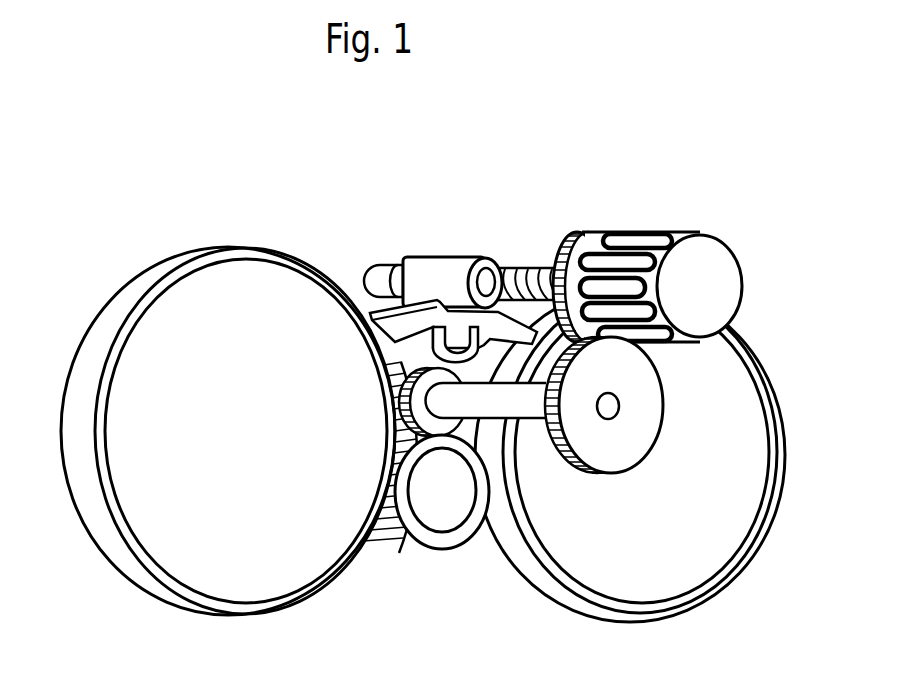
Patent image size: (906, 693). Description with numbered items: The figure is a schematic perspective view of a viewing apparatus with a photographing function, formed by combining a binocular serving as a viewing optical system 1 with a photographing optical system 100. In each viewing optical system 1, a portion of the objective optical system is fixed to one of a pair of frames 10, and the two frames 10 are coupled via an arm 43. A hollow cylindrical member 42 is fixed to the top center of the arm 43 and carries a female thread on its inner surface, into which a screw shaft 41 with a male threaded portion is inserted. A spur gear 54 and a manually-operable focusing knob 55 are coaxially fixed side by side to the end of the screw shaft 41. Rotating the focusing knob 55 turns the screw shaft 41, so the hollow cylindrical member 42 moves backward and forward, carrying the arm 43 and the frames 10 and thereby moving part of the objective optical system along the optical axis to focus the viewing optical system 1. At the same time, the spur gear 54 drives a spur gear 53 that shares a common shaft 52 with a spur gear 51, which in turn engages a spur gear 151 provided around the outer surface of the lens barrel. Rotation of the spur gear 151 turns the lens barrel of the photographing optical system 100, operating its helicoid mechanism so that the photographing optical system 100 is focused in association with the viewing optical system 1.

The viewing optical system 1 is at (201, 577).
The frame 10 is at (90, 520).
The screw shaft 41 is at (525, 269).
The hollow cylindrical member 42 is at (446, 257).
The arm 43 is at (421, 309).
The spur gear 51 is at (405, 367).
The common shaft 52 is at (484, 407).
The spur gear 53 is at (638, 407).
The spur gear 54 is at (575, 231).
The focusing knob 55 is at (651, 233).
The photographing optical system 100 is at (450, 523).
The spur gear 151 is at (397, 546).